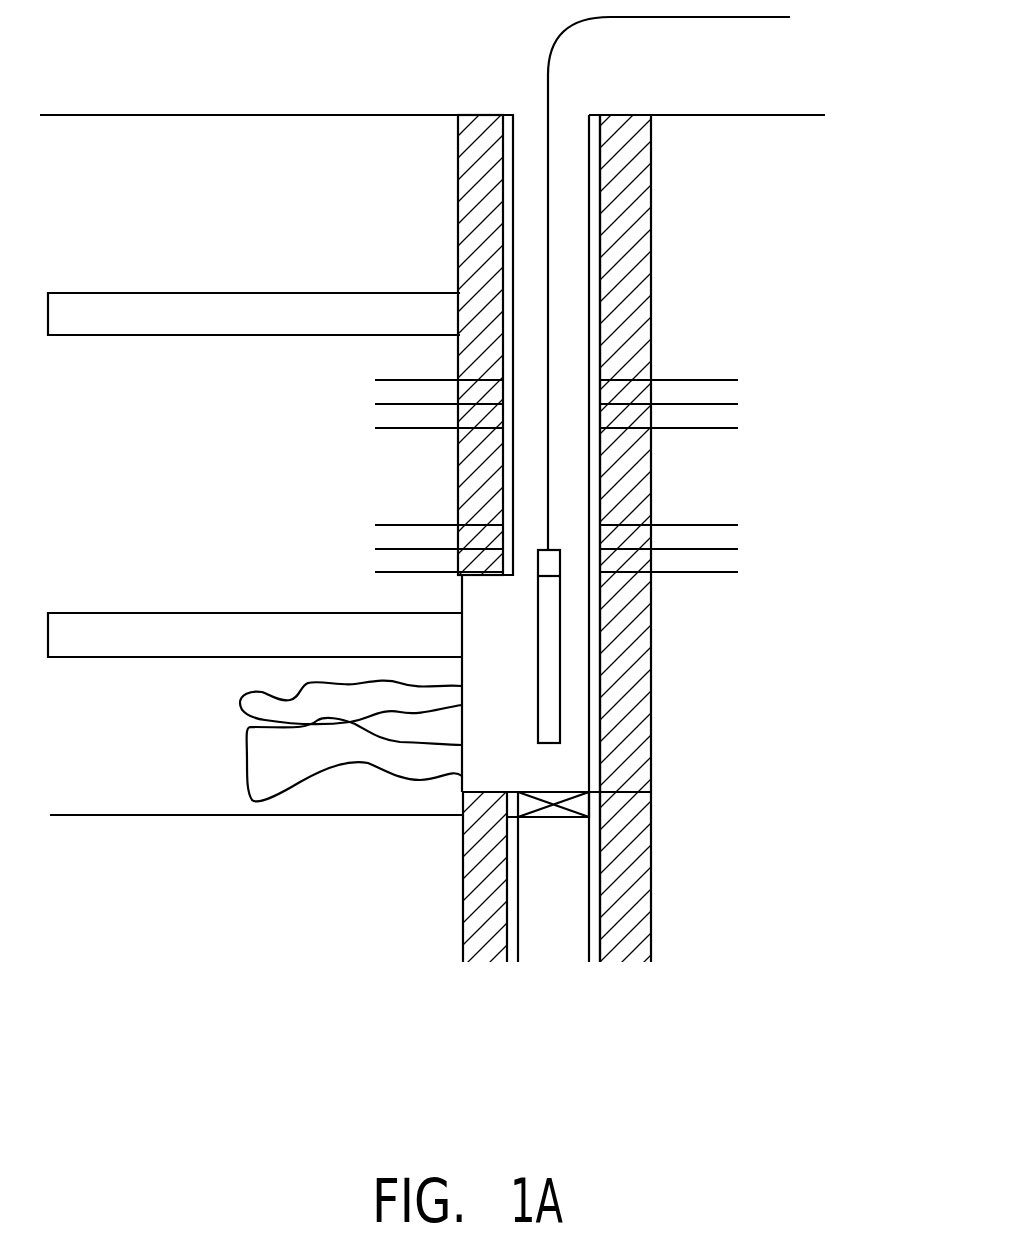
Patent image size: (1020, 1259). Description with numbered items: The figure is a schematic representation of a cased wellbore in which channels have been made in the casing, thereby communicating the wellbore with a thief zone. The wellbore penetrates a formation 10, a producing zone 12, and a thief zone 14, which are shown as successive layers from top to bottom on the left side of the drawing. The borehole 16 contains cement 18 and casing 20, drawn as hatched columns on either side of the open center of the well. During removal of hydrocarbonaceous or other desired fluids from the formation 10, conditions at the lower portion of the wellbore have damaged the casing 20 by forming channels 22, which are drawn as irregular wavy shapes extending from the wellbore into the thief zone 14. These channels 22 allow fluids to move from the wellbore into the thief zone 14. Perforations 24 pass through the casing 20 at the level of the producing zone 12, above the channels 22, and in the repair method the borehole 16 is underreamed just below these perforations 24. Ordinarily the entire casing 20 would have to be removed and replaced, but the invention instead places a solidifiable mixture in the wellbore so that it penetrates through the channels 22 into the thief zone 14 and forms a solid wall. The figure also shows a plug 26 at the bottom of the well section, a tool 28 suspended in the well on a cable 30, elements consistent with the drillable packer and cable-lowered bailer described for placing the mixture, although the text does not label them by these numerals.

The formation 10 is at (175, 217).
The producing zone 12 is at (177, 479).
The thief zone 14 is at (182, 743).
The borehole 16 is at (650, 165).
The cement 18 is at (485, 120).
The casing 20 is at (597, 717).
The channels 22 is at (473, 780).
The perforations 24 is at (390, 378).
The plug 26 is at (530, 818).
The downhole tool 28 is at (560, 652).
The wireline cable 30 is at (548, 287).